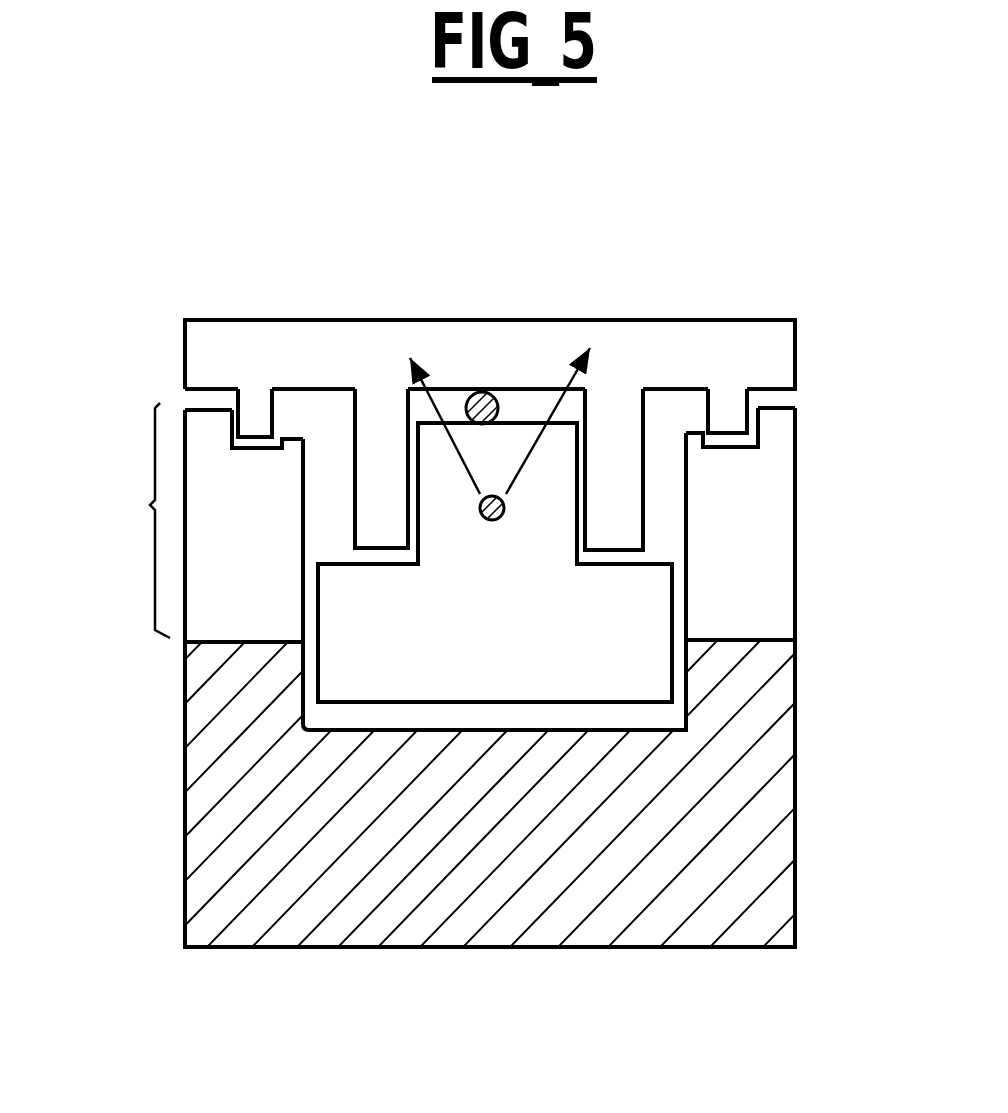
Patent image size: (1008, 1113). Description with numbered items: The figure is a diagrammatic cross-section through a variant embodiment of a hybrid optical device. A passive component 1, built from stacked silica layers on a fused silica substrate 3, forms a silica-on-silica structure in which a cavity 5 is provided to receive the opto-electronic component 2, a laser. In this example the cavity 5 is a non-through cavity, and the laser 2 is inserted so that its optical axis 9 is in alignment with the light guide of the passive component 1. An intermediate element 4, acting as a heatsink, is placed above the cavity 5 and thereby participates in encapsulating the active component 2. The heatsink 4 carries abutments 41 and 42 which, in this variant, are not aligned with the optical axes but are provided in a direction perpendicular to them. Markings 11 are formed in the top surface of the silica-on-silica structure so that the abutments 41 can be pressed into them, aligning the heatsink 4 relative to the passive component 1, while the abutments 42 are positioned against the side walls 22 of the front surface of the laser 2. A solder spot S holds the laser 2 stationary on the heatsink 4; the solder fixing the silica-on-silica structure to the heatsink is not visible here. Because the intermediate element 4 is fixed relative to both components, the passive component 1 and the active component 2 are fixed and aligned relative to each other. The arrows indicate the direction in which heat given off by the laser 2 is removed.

The passive component 1 is at (147, 520).
The opto-electronic component 2 is at (653, 615).
The substrate 3 is at (778, 792).
The intermediate element 4 is at (775, 343).
The cavity 5 is at (662, 529).
The optical axis 9 is at (495, 495).
The markings 11 is at (257, 452).
The side walls 22 is at (574, 524).
The abutments 41 is at (255, 410).
The abutments 42 is at (620, 447).
The solder spot S is at (478, 392).